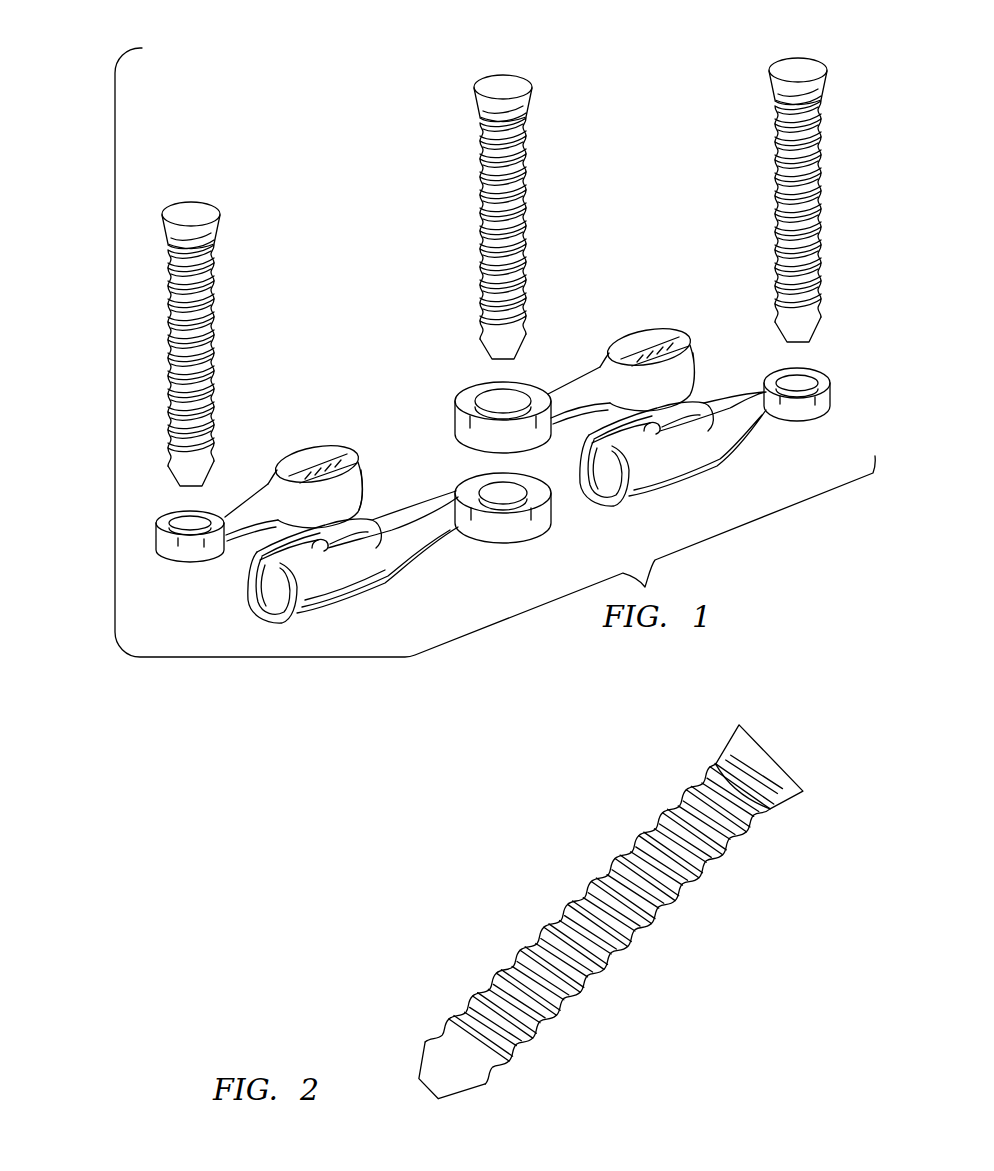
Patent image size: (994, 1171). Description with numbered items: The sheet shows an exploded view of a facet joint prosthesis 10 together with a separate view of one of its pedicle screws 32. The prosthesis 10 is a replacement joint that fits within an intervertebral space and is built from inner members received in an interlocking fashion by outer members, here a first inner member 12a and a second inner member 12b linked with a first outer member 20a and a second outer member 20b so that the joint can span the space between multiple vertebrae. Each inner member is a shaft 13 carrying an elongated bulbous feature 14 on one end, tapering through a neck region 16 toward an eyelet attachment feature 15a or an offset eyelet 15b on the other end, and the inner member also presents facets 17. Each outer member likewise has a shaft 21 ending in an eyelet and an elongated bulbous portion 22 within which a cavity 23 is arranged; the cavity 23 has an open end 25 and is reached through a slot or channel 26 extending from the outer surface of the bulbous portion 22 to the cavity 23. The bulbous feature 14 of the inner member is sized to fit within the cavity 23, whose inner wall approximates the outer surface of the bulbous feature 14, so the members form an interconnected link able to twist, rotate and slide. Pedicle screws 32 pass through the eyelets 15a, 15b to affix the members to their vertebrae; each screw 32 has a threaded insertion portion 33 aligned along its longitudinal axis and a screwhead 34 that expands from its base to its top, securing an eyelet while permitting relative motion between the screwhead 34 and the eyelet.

In FIG. 1, the facet joint prosthesis 10 is at (393, 105).
In FIG. 1, the first inner member 12a is at (305, 430).
In FIG. 1, the second inner member 12b is at (596, 348).
In FIG. 1, the shaft of inner member 13 is at (255, 535).
In FIG. 1, the elongated bulbous feature of inner member 14 is at (369, 482).
In FIG. 1, the attachment feature/eyelet 15a is at (172, 553).
In FIG. 1, the attachment feature/offset eyelet 15b is at (513, 530).
In FIG. 1, the neck region of inner member 16 is at (263, 487).
In FIG. 1, the facets of inner member 17 is at (318, 447).
In FIG. 1, the first outer member 20a is at (681, 440).
In FIG. 1, the second outer member 20b is at (267, 539).
In FIG. 1, the shaft of outer member 21 is at (400, 514).
In FIG. 1, the elongated bulbous portion of outer member 22 is at (343, 580).
In FIG. 1, the cavity in outer member 23 is at (277, 592).
In FIG. 1, the open end of cavity/outer member 25 is at (250, 600).
In FIG. 1, the cavity slot/channel 26 is at (318, 550).
In FIG. 1, the pedicle screws 32 is at (224, 253).
In FIG. 2, the pedicle screws 32 is at (624, 903).
In FIG. 2, the threaded insertion portion of pedicle screw 33 is at (640, 925).
In FIG. 2, the screwhead of pedicle screw 34 is at (762, 760).